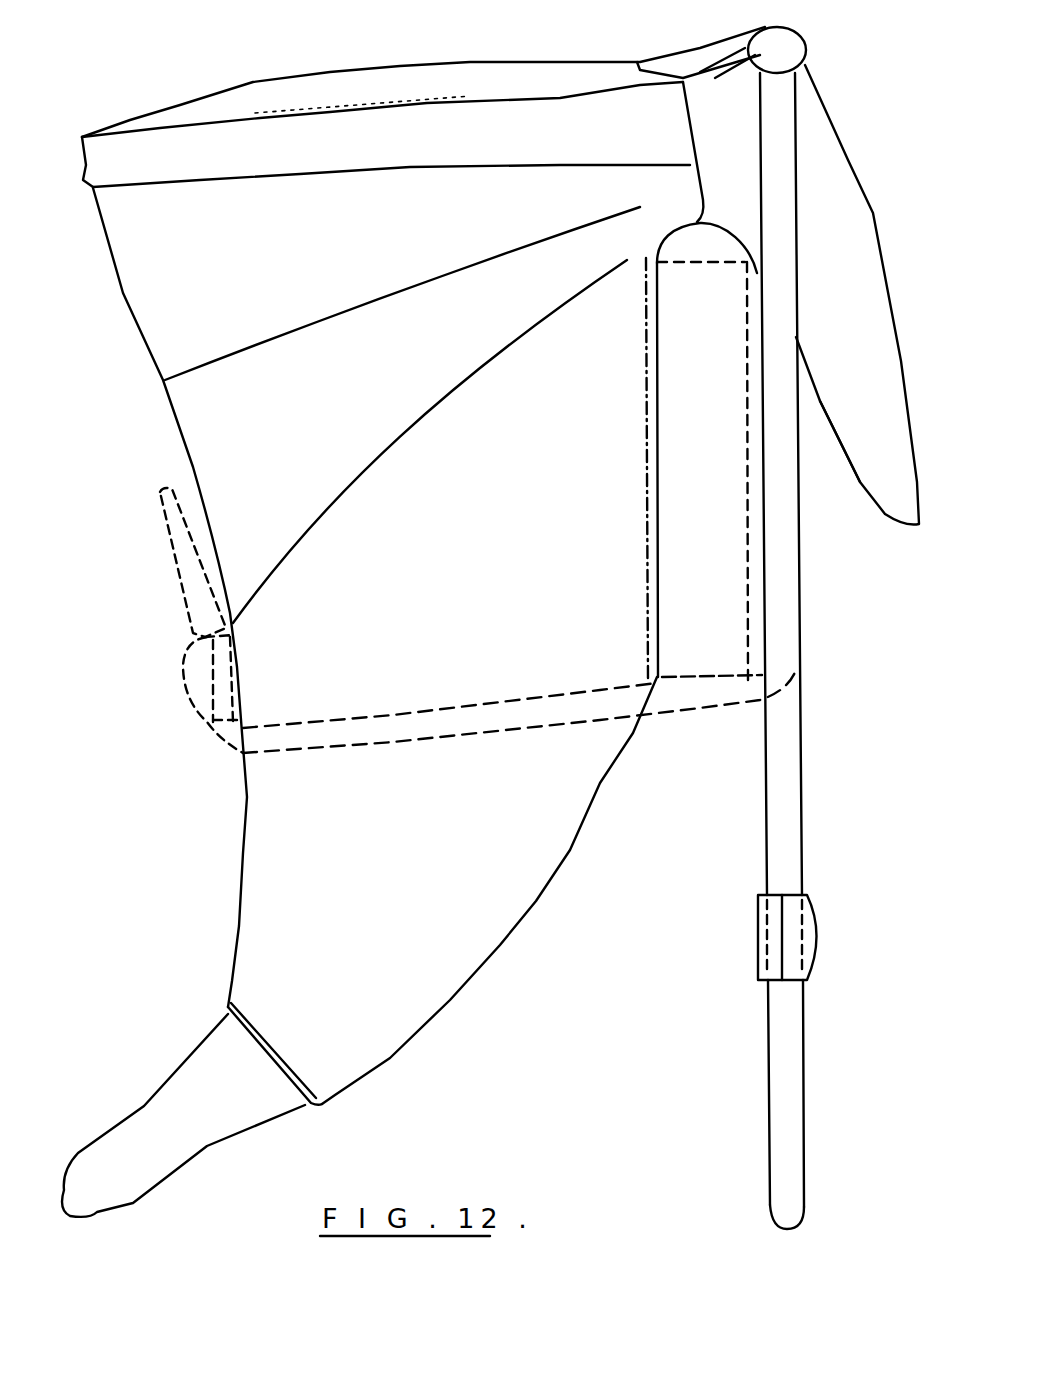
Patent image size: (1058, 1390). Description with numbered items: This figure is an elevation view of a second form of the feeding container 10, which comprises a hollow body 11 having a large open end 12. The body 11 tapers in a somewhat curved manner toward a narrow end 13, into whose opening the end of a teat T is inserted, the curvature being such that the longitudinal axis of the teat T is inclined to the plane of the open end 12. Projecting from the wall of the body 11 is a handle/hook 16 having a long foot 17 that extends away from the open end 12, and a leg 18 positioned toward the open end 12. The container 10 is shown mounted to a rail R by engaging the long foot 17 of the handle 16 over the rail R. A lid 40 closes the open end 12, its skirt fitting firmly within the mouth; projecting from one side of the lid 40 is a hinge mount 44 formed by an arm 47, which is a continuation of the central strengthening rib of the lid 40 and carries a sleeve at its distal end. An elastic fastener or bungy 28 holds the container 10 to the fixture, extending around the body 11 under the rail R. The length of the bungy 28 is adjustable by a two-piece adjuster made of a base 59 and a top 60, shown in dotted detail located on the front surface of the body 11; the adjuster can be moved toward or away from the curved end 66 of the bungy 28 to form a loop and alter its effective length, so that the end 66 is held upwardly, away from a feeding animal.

The container 10 is at (232, 826).
The hollow body 11 is at (438, 912).
The large open end 12 is at (413, 113).
The narrow end 13 is at (390, 1058).
The handle/hook 16 is at (869, 215).
The long foot 17 is at (869, 401).
The leg 18 is at (710, 155).
The bungy 28 is at (521, 730).
The lid 40 is at (252, 82).
The hinge mount 44 is at (665, 50).
The arm 47 is at (793, 28).
The base 59 is at (200, 683).
The top 60 is at (227, 670).
The curved end 66 is at (163, 490).
The rail R is at (735, 538).
The teat T is at (144, 1106).